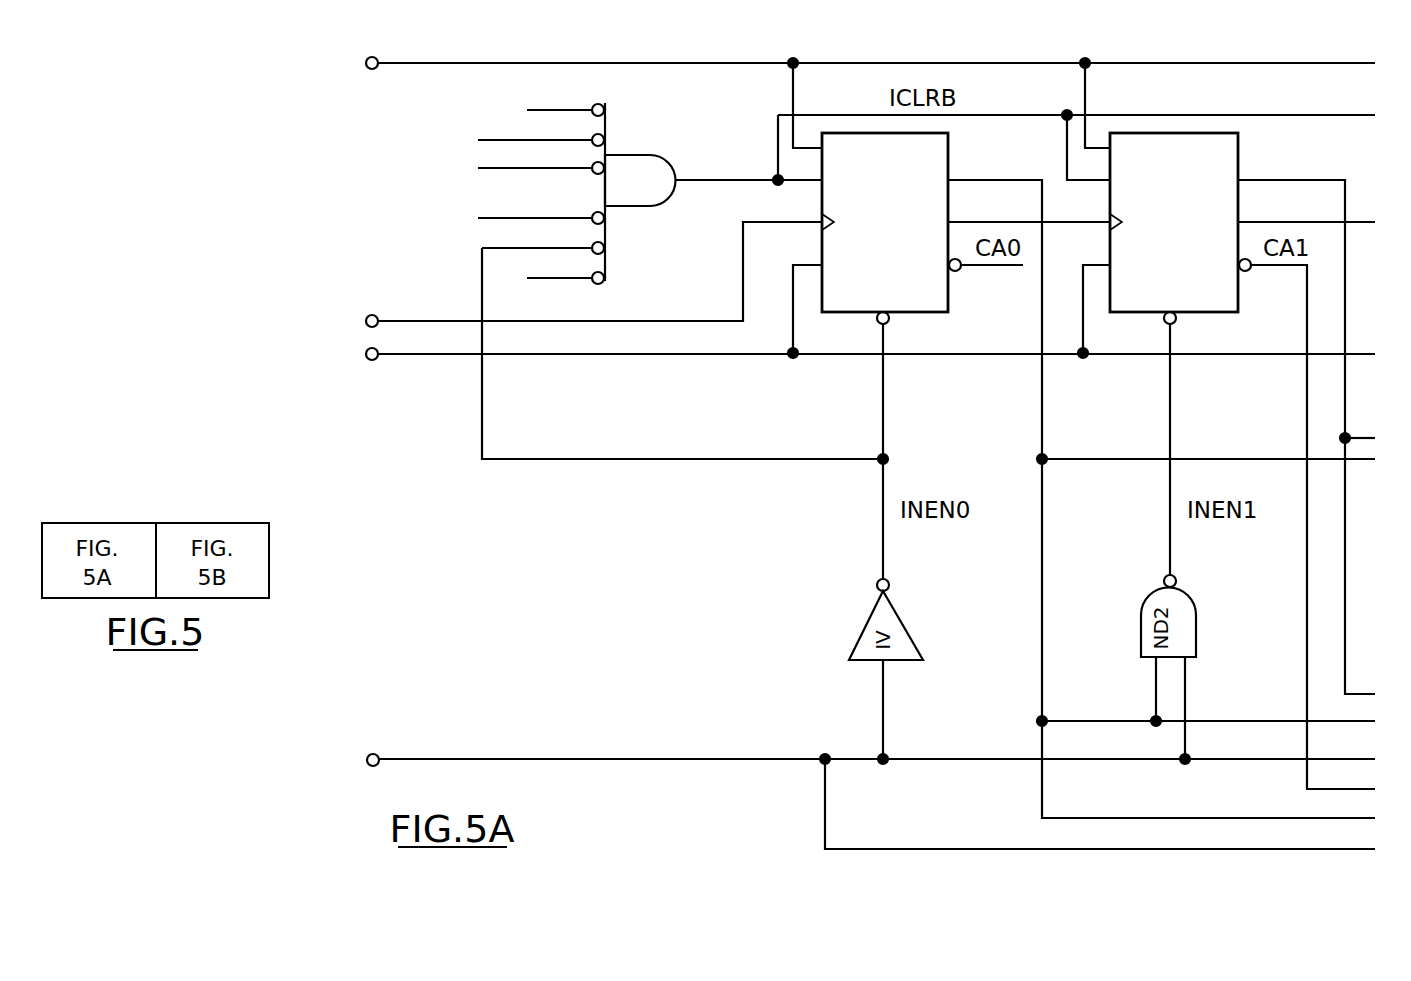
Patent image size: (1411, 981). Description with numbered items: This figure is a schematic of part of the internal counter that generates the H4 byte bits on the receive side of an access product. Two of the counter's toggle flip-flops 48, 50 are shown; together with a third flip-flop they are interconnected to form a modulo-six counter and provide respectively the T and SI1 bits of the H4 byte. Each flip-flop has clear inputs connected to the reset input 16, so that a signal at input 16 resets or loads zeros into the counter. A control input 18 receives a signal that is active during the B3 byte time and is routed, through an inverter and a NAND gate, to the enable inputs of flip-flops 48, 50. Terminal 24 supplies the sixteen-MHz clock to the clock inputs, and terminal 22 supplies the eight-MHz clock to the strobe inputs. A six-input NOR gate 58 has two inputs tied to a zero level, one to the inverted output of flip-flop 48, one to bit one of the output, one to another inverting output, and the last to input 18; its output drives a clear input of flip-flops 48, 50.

The input 16 is at (370, 70).
The gate 58 is at (632, 156).
The flip-flop 48 is at (922, 313).
The flip-flop 50 is at (1210, 313).
The terminal 24 is at (375, 316).
The terminal 22 is at (373, 360).
The control input 18 is at (378, 754).